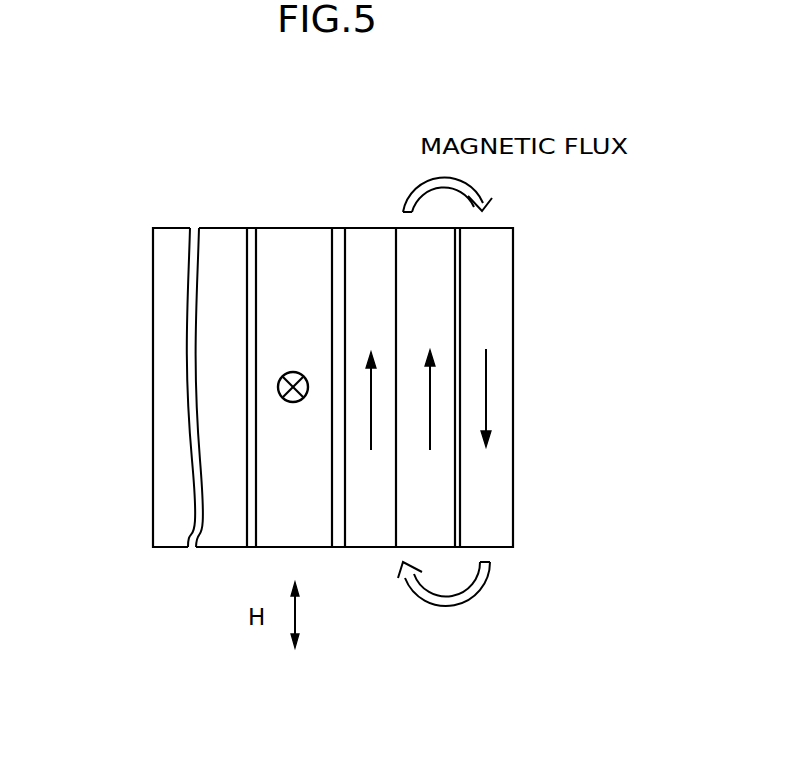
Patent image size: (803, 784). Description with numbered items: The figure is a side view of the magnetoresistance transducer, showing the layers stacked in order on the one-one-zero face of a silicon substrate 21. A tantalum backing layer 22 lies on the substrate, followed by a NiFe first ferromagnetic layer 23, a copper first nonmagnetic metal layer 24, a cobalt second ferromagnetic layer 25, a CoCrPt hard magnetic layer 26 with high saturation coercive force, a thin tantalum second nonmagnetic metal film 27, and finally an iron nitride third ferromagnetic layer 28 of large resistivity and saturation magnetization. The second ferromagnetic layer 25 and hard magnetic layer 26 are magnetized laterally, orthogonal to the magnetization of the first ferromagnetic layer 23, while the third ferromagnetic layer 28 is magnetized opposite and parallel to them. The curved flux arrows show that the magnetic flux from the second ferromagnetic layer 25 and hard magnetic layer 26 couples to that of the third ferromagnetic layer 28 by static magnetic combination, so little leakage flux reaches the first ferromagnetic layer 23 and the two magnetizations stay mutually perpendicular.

The silicon substrate 21 is at (155, 303).
The backing layer 22 is at (250, 268).
The first ferromagnetic layer 23 is at (300, 247).
The first nonmagnetic metal layer 24 is at (340, 543).
The second ferromagnetic layer 25 is at (370, 240).
The hard magnetic layer 26 is at (437, 315).
The second nonmagnetic metal film 27 is at (458, 270).
The third ferromagnetic layer 28 is at (507, 238).